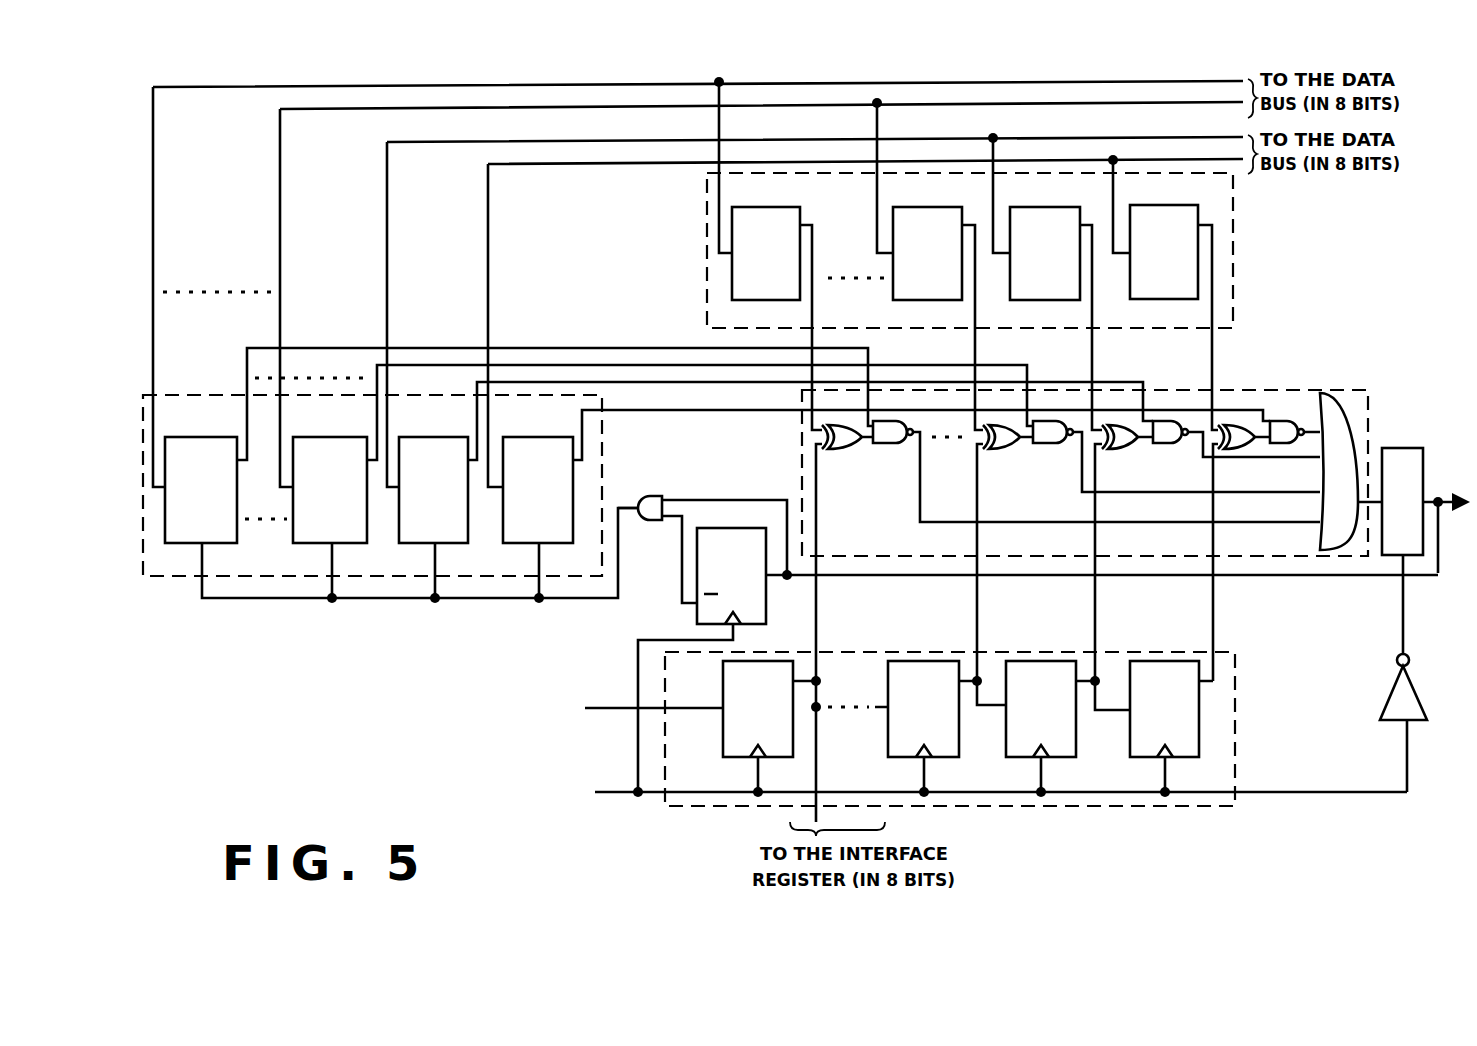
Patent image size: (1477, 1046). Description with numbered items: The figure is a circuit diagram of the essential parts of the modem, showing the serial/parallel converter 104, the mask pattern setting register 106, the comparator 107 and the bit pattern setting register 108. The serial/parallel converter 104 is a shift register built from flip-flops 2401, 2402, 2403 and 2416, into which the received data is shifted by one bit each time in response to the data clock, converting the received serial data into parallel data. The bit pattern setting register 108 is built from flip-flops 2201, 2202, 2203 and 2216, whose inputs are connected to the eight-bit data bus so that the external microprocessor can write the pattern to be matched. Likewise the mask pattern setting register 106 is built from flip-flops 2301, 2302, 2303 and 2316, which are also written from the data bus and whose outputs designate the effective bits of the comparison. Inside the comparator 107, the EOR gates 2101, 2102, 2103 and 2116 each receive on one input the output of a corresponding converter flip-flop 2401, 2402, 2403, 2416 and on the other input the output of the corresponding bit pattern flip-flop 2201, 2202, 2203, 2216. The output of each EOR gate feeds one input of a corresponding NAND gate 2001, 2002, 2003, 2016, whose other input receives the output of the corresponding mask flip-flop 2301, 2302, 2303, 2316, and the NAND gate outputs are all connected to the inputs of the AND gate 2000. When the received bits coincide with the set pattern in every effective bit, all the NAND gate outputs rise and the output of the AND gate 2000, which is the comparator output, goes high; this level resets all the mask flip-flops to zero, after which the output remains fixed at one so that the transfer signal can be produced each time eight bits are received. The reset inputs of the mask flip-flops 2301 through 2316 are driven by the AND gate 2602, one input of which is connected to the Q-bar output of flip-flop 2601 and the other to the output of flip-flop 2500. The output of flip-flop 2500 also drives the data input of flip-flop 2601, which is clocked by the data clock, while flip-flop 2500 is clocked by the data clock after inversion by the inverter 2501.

The serial/parallel converter 104 is at (1237, 770).
The mask pattern setting register 106 is at (211, 395).
The comparator 107 is at (1370, 401).
The bit pattern setting register 108 is at (1235, 268).
The flip-flop 2316 is at (172, 447).
The flip-flop 2303 is at (300, 447).
The flip-flop 2302 is at (402, 447).
The flip-flop 2301 is at (507, 447).
The flip-flop 2216 is at (749, 217).
The flip-flop 2203 is at (910, 217).
The flip-flop 2202 is at (1037, 217).
The flip-flop 2201 is at (1144, 217).
The EOR gate 2116 is at (845, 451).
The EOR gate 2103 is at (1006, 451).
The EOR gate 2102 is at (1120, 451).
The EOR gate 2101 is at (1228, 424).
The NAND gate 2016 is at (893, 446).
The NAND gate 2003 is at (1053, 446).
The NAND gate 2002 is at (1168, 420).
The NAND gate 2001 is at (1285, 414).
The AND gate 2000 is at (1339, 393).
The flip-flop 2500 is at (1404, 448).
The inverter 2501 is at (1394, 692).
The flip-flop 2601 is at (733, 528).
The AND gate 2602 is at (651, 496).
The flip-flop 2416 is at (743, 757).
The flip-flop 2403 is at (906, 757).
The flip-flop 2402 is at (1025, 757).
The flip-flop 2401 is at (1145, 757).